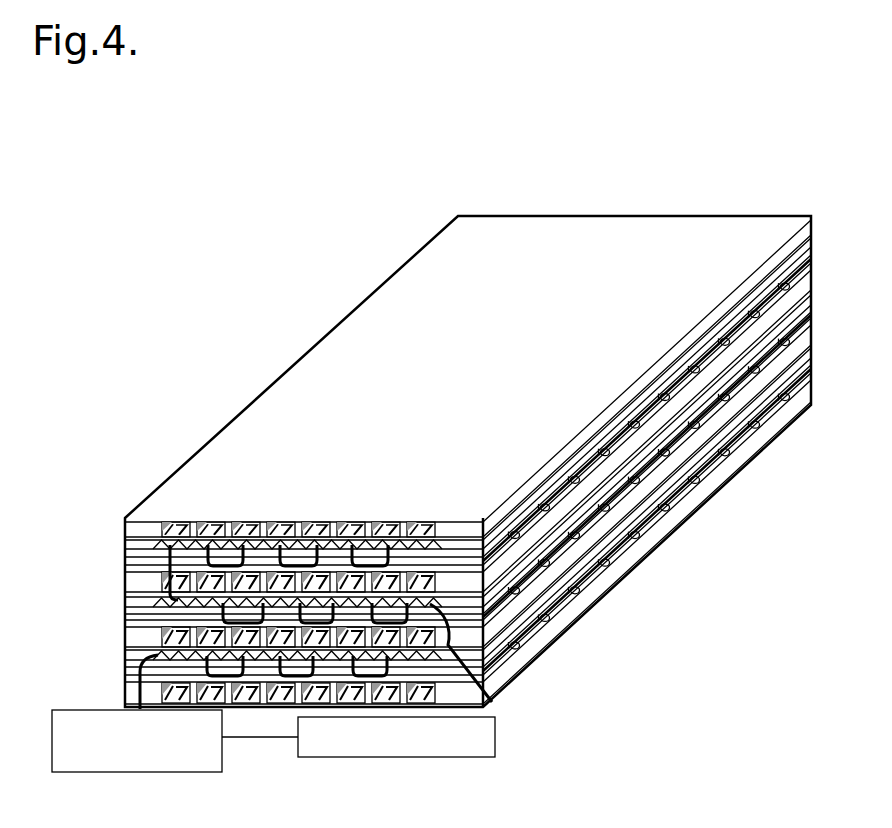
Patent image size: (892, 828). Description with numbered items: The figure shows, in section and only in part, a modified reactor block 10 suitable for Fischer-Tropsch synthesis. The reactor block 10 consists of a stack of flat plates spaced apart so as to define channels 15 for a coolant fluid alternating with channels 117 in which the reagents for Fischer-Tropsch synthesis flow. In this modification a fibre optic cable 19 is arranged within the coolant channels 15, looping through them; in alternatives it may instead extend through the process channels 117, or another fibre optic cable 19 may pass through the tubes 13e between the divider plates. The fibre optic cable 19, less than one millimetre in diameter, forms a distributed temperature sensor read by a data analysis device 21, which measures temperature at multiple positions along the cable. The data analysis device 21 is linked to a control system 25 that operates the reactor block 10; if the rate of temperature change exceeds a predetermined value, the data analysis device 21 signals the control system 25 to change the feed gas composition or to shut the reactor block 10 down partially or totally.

The reactor block 10 is at (230, 392).
The channels for a coolant fluid 15 is at (327, 540).
The channels for the Fischer-Tropsch synthesis 117 is at (397, 580).
The tubes 13e is at (575, 590).
The fibre optic cable 19 is at (492, 702).
The data analysis device 21 is at (200, 762).
The control system 25 is at (367, 748).